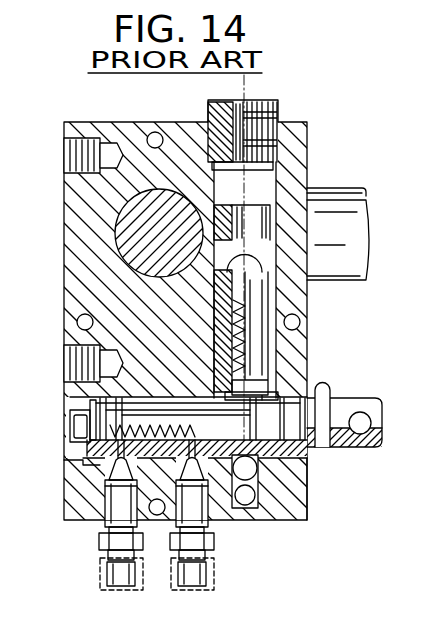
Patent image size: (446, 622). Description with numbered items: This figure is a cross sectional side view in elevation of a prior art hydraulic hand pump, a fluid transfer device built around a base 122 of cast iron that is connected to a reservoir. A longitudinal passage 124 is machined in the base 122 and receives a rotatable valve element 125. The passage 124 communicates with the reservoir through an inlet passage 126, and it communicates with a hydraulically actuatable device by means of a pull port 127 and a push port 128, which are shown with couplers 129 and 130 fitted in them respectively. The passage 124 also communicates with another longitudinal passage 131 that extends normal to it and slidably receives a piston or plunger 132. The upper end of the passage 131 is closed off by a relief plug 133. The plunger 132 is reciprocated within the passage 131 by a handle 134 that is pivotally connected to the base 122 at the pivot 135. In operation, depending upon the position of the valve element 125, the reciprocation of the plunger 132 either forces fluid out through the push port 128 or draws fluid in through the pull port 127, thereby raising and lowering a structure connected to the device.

The base 122 is at (100, 268).
The longitudinal passage 124 is at (277, 396).
The rotatable valve element 125 is at (345, 402).
The inlet passage 126 is at (247, 466).
The pull port 127 is at (113, 508).
The push port 128 is at (200, 523).
The coupler 129 is at (100, 581).
The coupler 130 is at (215, 561).
The longitudinal passage 131 is at (275, 294).
The plunger 132 is at (258, 337).
The relief plug 133 is at (272, 94).
The handle 134 is at (339, 188).
The pivot connection 135 is at (132, 222).